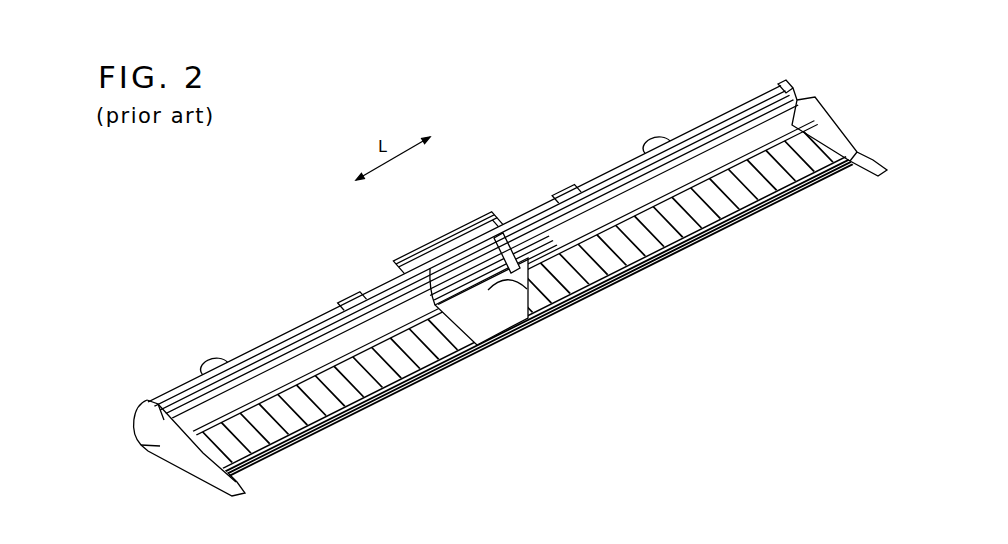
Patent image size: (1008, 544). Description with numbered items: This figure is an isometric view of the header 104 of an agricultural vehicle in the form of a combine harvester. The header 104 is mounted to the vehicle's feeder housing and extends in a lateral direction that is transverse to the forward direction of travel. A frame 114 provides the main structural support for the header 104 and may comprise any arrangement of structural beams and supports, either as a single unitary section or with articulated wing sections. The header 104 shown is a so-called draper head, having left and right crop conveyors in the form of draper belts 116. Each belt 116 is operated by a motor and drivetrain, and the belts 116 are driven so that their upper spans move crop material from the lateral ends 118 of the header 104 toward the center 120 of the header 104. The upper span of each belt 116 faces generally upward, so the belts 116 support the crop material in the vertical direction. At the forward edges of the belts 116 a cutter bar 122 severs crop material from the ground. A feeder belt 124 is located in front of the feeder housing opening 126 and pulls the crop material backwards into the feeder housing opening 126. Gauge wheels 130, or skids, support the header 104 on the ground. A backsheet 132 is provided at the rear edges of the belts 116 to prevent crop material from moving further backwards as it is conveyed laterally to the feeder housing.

The header 104 is at (479, 264).
The frame 114 is at (397, 280).
The draper belts 116 is at (366, 424).
The lateral ends 118 is at (173, 443).
The center 120 is at (523, 298).
The cutter bar 122 is at (662, 262).
The feeder belt 124 is at (556, 312).
The feeder housing opening 126 is at (490, 218).
The gauge wheels 130 is at (216, 360).
The backsheet 132 is at (312, 358).